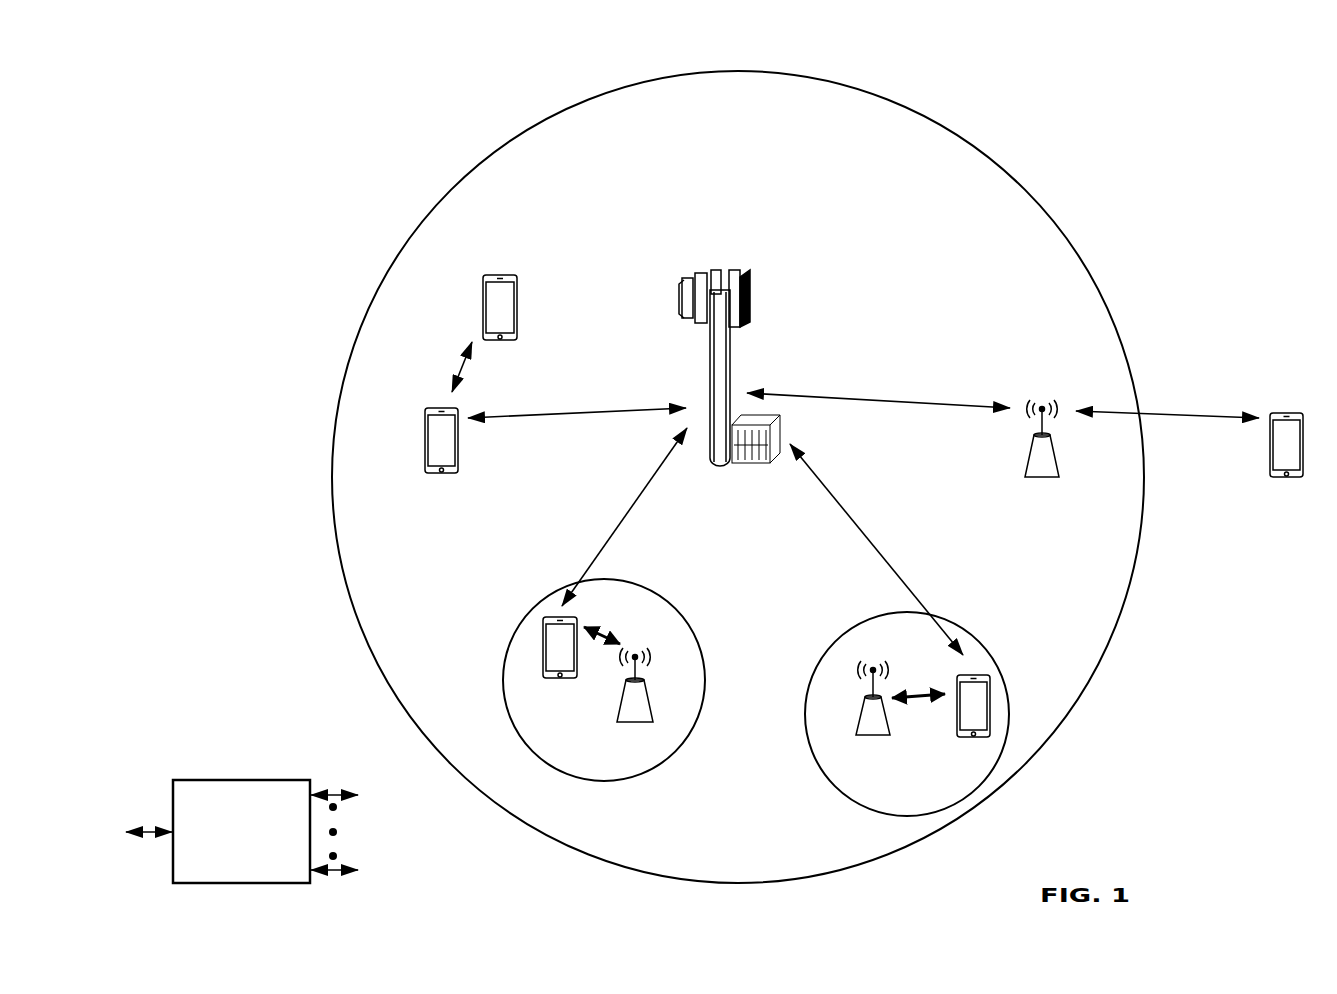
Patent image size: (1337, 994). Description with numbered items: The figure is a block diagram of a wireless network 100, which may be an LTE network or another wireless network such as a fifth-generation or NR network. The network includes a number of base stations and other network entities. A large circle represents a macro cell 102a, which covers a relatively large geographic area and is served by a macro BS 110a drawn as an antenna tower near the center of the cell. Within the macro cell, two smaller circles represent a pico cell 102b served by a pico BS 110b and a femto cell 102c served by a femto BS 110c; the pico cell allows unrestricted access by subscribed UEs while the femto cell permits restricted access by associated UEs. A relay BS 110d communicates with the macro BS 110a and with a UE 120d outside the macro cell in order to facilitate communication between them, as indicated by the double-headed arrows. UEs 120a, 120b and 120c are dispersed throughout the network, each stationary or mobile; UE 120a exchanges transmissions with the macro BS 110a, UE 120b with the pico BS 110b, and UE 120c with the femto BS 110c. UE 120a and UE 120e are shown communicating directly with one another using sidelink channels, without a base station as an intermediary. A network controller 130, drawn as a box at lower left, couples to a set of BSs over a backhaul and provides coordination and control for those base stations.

The wireless network 100 is at (226, 66).
The macro cell 102a is at (1007, 170).
The pico cell 102b is at (691, 620).
The femto cell 102c is at (848, 628).
The macro BS 110a is at (725, 265).
The pico BS 110b is at (655, 708).
The femto BS 110c is at (854, 724).
The relay BS 110d is at (1043, 400).
The UE 120a is at (426, 440).
The UE 120b is at (546, 680).
The UE 120c is at (968, 738).
The UE 120d is at (1299, 412).
The UE 120e is at (483, 292).
The network controller 130 is at (238, 780).